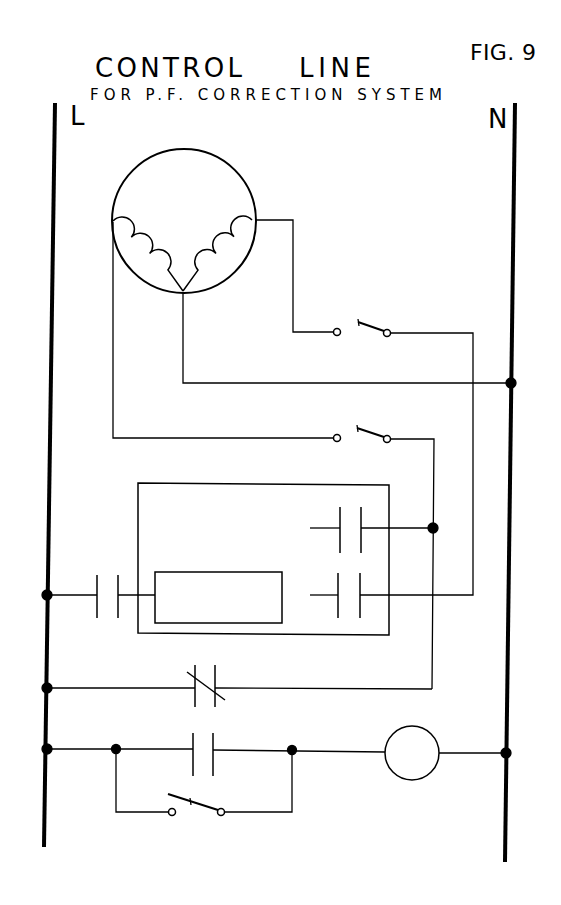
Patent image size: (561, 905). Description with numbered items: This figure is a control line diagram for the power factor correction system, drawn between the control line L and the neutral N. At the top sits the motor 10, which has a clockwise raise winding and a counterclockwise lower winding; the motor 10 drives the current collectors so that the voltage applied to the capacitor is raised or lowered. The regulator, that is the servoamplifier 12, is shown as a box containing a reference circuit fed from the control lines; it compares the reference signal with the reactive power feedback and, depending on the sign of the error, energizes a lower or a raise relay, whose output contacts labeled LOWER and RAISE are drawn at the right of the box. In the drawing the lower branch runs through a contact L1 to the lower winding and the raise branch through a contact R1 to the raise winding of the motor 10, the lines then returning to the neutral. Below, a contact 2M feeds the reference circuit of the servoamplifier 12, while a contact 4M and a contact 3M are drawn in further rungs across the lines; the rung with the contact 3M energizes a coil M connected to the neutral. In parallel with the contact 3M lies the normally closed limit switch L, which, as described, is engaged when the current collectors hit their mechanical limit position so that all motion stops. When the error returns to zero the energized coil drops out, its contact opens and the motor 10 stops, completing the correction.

The motor 10 is at (194, 221).
The servoamplifier 12 is at (276, 559).
The raise relay contact R1 is at (362, 320).
The lower relay contact L1 is at (362, 425).
The 2M contact 2M is at (94, 596).
The 3M contact 3M is at (216, 754).
The 4M contact 4M is at (213, 686).
The motor starter coil M is at (412, 753).
The limit switch L is at (202, 805).